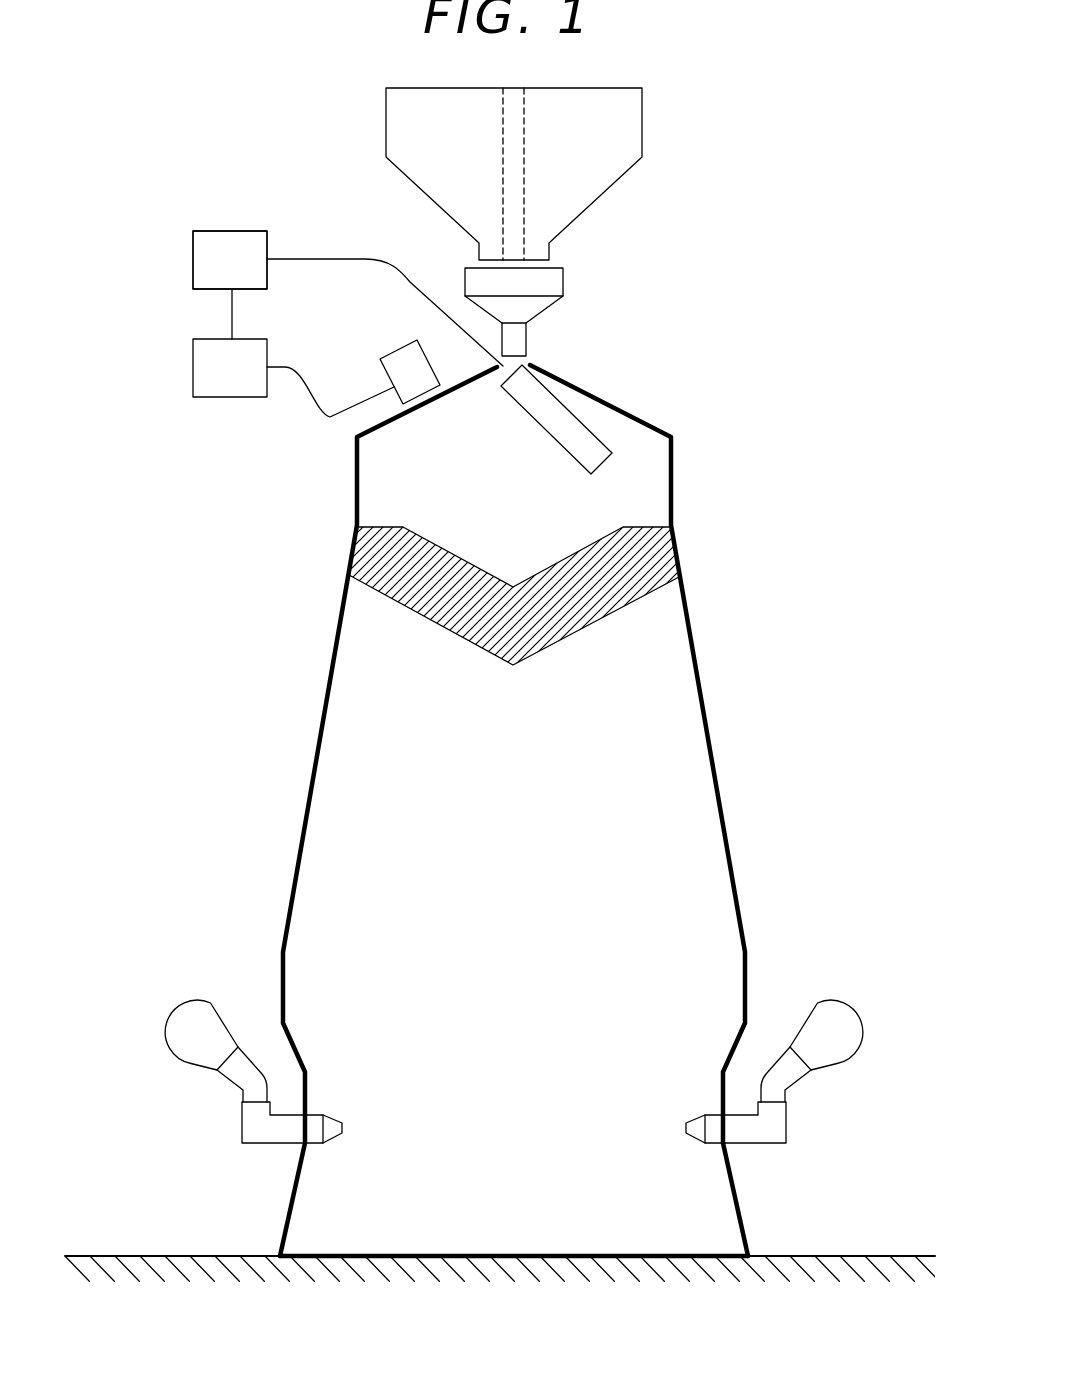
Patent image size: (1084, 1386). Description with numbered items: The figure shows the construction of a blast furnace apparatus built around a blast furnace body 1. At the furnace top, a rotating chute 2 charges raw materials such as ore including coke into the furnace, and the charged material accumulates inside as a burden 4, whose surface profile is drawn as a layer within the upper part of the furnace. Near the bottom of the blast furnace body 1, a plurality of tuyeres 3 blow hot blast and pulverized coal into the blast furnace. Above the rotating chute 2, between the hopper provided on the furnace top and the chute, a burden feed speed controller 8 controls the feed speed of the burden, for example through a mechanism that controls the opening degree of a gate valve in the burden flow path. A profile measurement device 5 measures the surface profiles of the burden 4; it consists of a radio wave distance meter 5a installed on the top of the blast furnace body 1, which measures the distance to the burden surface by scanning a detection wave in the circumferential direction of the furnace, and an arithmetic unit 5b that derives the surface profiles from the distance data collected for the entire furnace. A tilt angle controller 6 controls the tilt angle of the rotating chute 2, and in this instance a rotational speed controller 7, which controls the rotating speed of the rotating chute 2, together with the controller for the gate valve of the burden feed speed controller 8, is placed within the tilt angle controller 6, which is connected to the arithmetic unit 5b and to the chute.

The blast furnace body 1 is at (673, 480).
The rotating chute 2 is at (557, 420).
The tuyeres 3 is at (333, 1122).
The burden 4 is at (428, 618).
The profile measurement device 5 is at (316, 422).
The radio wave distance meter 5a is at (393, 393).
The arithmetic unit 5b is at (250, 397).
The tilt angle controller 6 is at (213, 231).
The rotational speed controller 7 is at (251, 231).
The burden feed speed controller 8 is at (528, 337).